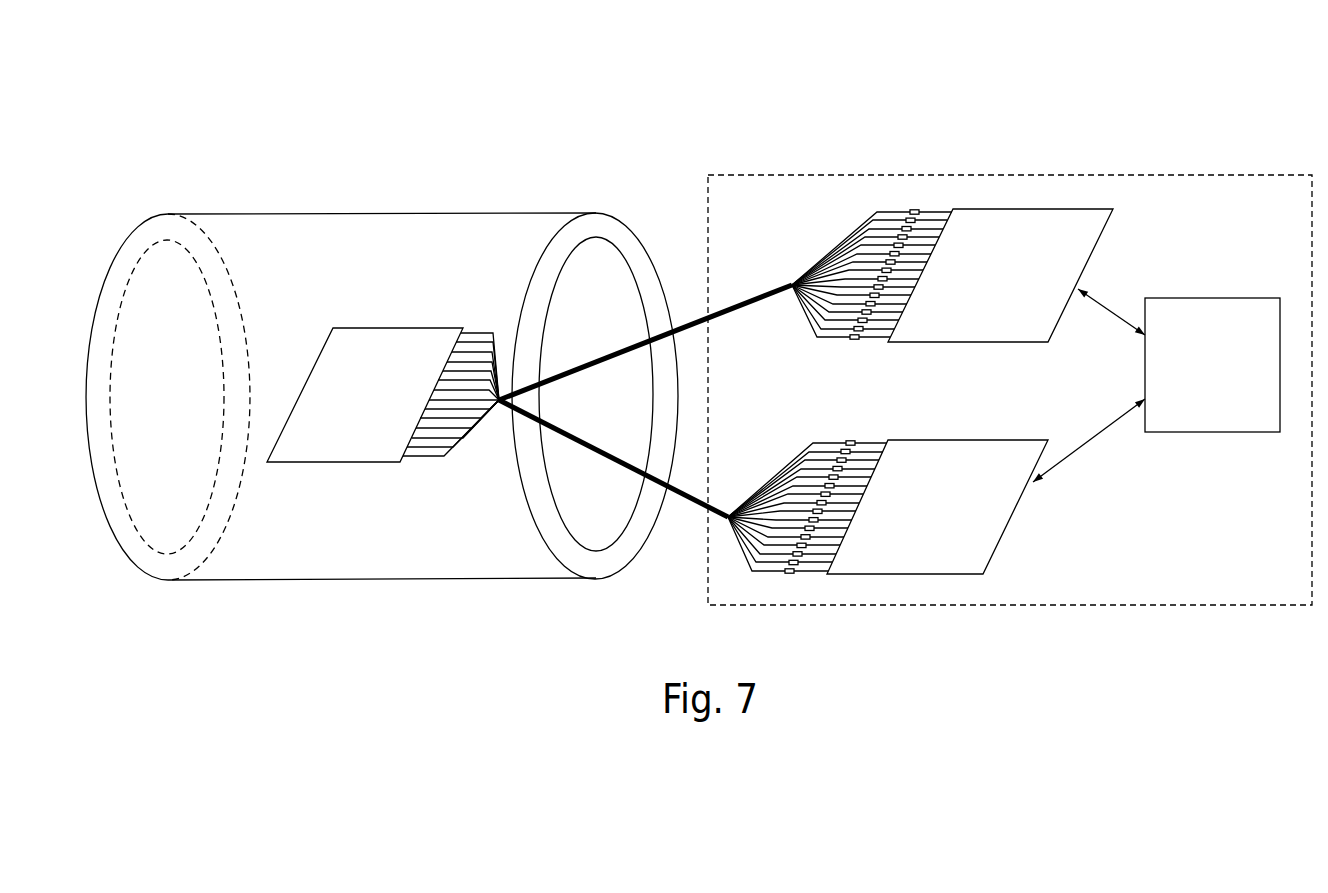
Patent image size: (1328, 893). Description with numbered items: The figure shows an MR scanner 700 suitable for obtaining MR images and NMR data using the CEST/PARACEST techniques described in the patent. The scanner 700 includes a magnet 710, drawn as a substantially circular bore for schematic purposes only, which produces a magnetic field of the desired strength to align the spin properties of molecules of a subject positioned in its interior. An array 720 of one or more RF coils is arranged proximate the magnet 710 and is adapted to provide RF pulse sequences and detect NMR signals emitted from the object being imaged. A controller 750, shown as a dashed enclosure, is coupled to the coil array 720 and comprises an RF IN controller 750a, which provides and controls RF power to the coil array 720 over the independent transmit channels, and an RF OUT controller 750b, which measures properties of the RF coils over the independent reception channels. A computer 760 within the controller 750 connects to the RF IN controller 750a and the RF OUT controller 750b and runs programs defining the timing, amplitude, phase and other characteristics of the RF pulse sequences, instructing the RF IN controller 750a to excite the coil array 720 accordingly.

The scanner 700 is at (290, 103).
The magnet 710 is at (218, 213).
The array of RF coils 720 is at (383, 462).
The controller 750 is at (746, 175).
The RF IN controller 750a is at (990, 343).
The RF OUT controller 750b is at (1010, 525).
The computer 760 is at (1218, 432).